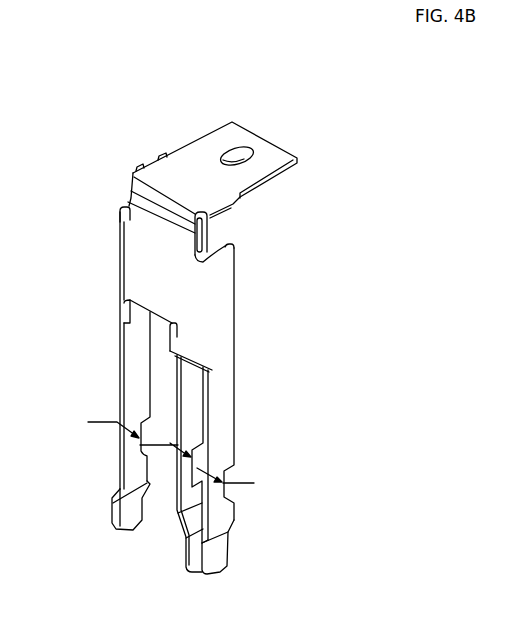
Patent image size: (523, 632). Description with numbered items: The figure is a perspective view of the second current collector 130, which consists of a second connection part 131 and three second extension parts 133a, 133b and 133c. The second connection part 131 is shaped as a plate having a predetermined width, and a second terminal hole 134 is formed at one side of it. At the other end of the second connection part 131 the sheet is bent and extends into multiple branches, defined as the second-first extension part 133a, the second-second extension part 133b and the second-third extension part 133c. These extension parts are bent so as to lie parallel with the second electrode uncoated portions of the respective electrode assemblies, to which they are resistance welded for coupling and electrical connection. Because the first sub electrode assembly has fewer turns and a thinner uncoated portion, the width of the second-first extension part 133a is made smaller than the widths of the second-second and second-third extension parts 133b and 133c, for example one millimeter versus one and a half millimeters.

The second current collector 130 is at (92, 143).
The second connection part 131 is at (200, 152).
The second terminal hole 134 is at (239, 152).
The second-first extension part 133a is at (200, 408).
The second-second extension part 133b is at (227, 390).
The second-third extension part 133c is at (134, 356).